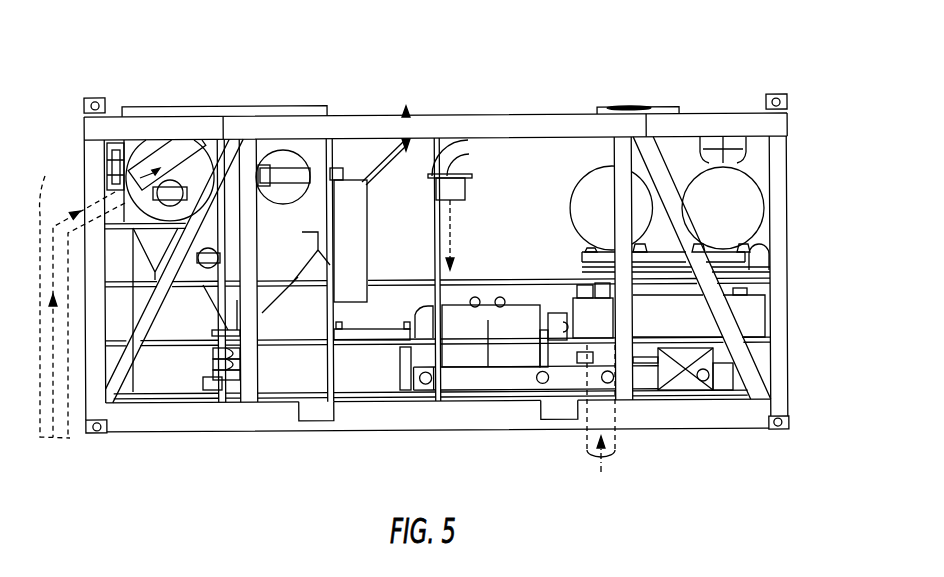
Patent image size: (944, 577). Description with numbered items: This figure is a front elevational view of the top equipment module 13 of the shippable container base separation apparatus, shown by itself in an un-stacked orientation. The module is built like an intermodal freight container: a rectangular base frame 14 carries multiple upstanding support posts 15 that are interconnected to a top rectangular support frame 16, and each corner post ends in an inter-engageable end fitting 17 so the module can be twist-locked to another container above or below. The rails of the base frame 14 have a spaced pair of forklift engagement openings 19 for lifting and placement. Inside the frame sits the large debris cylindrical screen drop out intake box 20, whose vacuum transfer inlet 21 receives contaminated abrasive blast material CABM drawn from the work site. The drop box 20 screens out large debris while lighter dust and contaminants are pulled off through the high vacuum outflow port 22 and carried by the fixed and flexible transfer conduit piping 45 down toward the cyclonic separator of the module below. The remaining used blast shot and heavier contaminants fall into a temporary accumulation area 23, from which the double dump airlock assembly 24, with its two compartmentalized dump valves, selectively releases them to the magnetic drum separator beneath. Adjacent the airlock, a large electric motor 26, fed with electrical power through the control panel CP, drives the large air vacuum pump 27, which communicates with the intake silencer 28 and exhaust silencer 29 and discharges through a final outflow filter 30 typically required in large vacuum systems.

The equipment module 13 is at (452, 254).
The rectangular base frame 14 is at (532, 418).
The upstanding support posts 15 is at (778, 382).
The top rectangular support frame 16 is at (545, 123).
The inter-engageable end fitting 17 is at (790, 102).
The forklift engagement openings 19 is at (330, 410).
The cylindrical screen drop out intake box 20 is at (322, 150).
The vacuum transfer inlet 21 is at (187, 150).
The high vacuum outflow port 22 is at (365, 147).
The temporary accumulation area 23 is at (210, 295).
The double dump airlock assembly 24 is at (212, 355).
The large electric motor 26 is at (522, 357).
The air vacuum pump 27 is at (556, 317).
The intake silencer 28 is at (592, 198).
The exhaust silencer 29 is at (746, 197).
The final outflow filter 30 is at (698, 322).
The transfer conduit piping 45 is at (460, 152).
The control panel CP is at (358, 196).
The contaminated abrasive blast material CABM is at (80, 294).